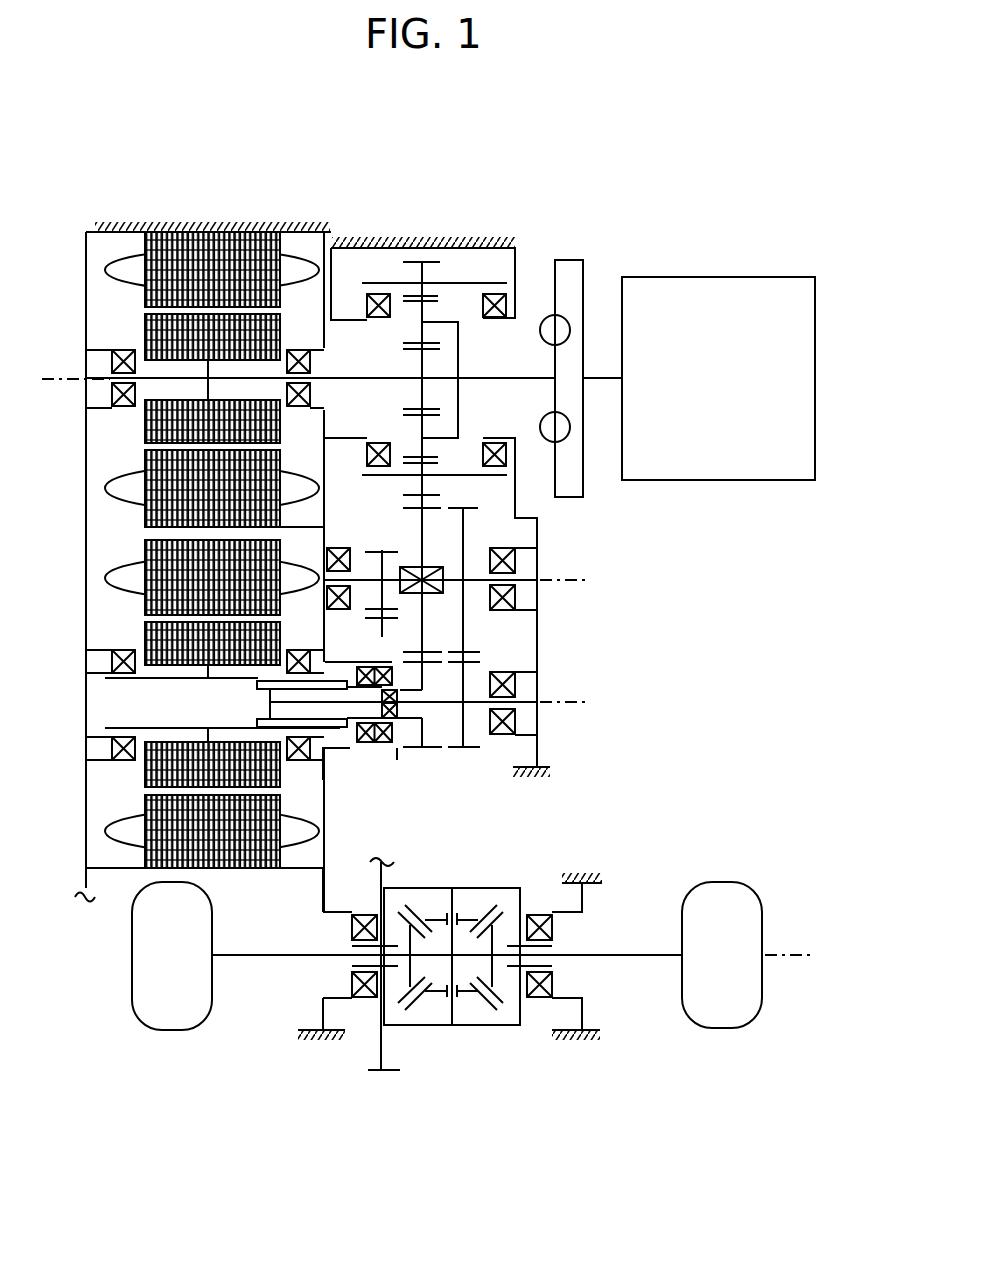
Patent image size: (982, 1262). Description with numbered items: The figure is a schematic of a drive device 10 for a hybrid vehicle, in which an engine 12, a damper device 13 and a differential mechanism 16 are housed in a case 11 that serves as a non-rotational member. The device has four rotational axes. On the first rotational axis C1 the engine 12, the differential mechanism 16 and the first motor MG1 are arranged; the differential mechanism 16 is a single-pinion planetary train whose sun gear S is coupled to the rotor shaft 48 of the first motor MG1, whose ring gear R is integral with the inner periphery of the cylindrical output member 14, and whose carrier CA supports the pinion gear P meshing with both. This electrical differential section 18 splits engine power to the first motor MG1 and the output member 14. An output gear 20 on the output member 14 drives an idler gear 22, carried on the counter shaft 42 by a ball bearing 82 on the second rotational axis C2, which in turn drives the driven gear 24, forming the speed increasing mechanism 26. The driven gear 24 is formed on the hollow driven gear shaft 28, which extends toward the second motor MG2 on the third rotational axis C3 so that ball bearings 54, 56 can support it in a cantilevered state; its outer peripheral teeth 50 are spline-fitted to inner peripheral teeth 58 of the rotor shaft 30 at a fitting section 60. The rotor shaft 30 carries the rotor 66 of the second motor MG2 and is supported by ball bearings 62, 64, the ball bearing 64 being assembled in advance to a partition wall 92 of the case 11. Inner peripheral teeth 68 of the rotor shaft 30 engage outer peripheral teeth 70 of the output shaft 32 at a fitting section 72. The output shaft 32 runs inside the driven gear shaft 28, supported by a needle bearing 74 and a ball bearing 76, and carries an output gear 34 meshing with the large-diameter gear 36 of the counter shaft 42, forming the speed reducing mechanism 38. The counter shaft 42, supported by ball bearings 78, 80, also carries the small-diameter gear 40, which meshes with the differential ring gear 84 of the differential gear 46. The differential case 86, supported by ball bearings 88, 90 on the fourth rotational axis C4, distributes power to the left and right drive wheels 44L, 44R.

The drive device 10 is at (619, 168).
The case 11 is at (472, 236).
The engine 12 is at (713, 287).
The damper device 13 is at (584, 276).
The output member 14 is at (467, 283).
The differential mechanism 16 is at (396, 262).
The electrical differential section 18 is at (322, 230).
The output gear 20 is at (417, 262).
The idler gear 22 is at (420, 530).
The driven gear 24 is at (408, 748).
The speed increasing mechanism 26 is at (434, 642).
The driven gear shaft 28 is at (397, 760).
The rotor shaft 30 is at (162, 681).
The output shaft 32 is at (424, 708).
The output gear 34 is at (468, 750).
The large-diameter gear 36 is at (470, 514).
The speed reducing mechanism 38 is at (490, 657).
The small-diameter gear 40 is at (381, 548).
The counter shaft 42 is at (452, 638).
The left drive wheel 44L is at (160, 1007).
The right drive wheel 44R is at (705, 1007).
The differential gear 46 is at (366, 1041).
The rotor shaft 48 is at (330, 378).
The outer peripheral teeth 50 is at (398, 636).
The ball bearing 54 is at (368, 745).
The ball bearing 56 is at (385, 747).
The inner peripheral teeth 58 is at (374, 676).
The fitting section 60 is at (331, 752).
The ball bearing 62 is at (125, 755).
The ball bearing 64 is at (298, 651).
The rotor 66 is at (153, 773).
The inner peripheral teeth 68 is at (267, 688).
The outer peripheral teeth 70 is at (302, 723).
The fitting section 72 is at (252, 720).
The needle bearing 74 is at (398, 698).
The ball bearing 76 is at (517, 690).
The ball bearing 78 is at (326, 563).
The ball bearing 80 is at (490, 562).
The ball bearing 82 is at (423, 567).
The differential ring gear 84 is at (372, 617).
The differential case 86 is at (468, 888).
The ball bearing 88 is at (351, 927).
The ball bearing 90 is at (553, 927).
The partition wall 92 is at (324, 866).
The first motor MG1 is at (211, 218).
The second motor MG2 is at (105, 617).
The first rotational axis C1 is at (75, 380).
The second rotational axis C2 is at (583, 583).
The third rotational axis C3 is at (583, 705).
The fourth rotational axis C4 is at (805, 957).
The sun gear S is at (404, 345).
The pinion gear P is at (405, 413).
The ring gear R is at (416, 462).
The carrier CA is at (430, 322).